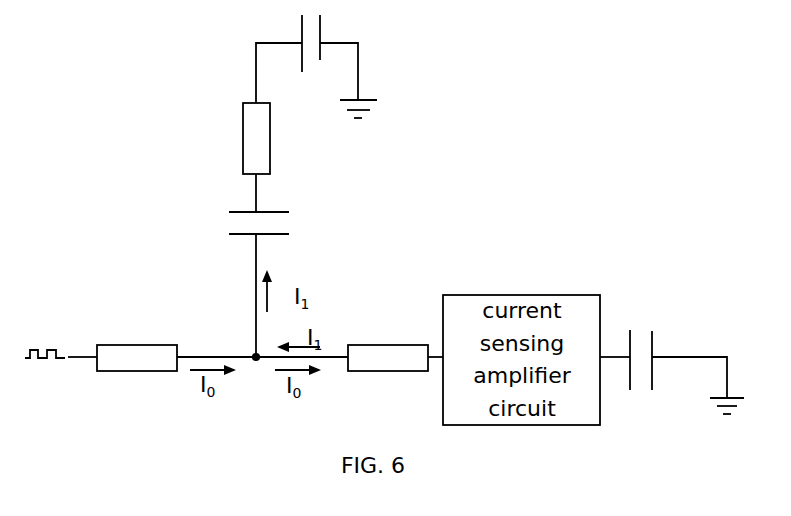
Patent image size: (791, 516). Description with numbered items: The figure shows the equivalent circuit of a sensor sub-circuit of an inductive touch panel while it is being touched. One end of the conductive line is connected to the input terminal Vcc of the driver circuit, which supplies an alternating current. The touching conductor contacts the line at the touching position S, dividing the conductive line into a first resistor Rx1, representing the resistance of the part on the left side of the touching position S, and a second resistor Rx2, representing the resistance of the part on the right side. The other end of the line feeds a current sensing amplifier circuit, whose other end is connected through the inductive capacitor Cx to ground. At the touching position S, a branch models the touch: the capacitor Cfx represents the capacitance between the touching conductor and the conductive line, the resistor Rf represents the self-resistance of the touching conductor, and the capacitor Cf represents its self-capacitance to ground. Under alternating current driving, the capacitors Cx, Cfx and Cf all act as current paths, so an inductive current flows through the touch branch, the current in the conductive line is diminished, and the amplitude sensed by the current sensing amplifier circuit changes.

The input terminal of the driver circuit Vcc is at (44, 368).
The first resistor Rx1 is at (137, 345).
The second resistor Rx2 is at (388, 345).
The touching position S is at (246, 344).
The inductive capacitor Cx is at (642, 348).
The capacitor between touching conductor and conductive line Cfx is at (272, 227).
The self-resistance of the touching conductor Rf is at (269, 138).
The self-capacitance of the touching conductor Cf is at (313, 55).